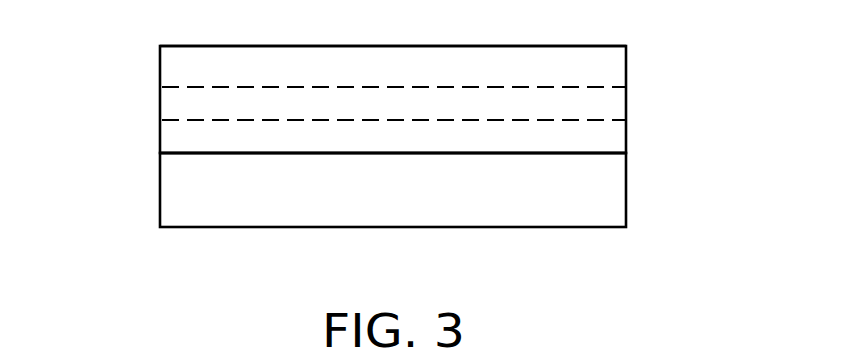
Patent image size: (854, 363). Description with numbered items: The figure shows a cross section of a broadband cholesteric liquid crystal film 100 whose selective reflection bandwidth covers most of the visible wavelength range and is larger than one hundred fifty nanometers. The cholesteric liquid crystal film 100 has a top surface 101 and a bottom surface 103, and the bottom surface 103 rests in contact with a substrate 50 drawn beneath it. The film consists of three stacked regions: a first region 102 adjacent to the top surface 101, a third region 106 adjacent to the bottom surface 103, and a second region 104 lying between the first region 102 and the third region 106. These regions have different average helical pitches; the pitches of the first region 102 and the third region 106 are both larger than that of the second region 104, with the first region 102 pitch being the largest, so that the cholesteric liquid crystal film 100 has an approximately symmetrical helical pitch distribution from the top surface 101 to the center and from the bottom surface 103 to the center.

The substrate 50 is at (627, 190).
The cholesteric liquid crystal film 100 is at (734, 45).
The top surface 101 is at (196, 46).
The first region 102 is at (627, 65).
The bottom surface 103 is at (196, 153).
The second region 104 is at (627, 101).
The third region 106 is at (627, 136).